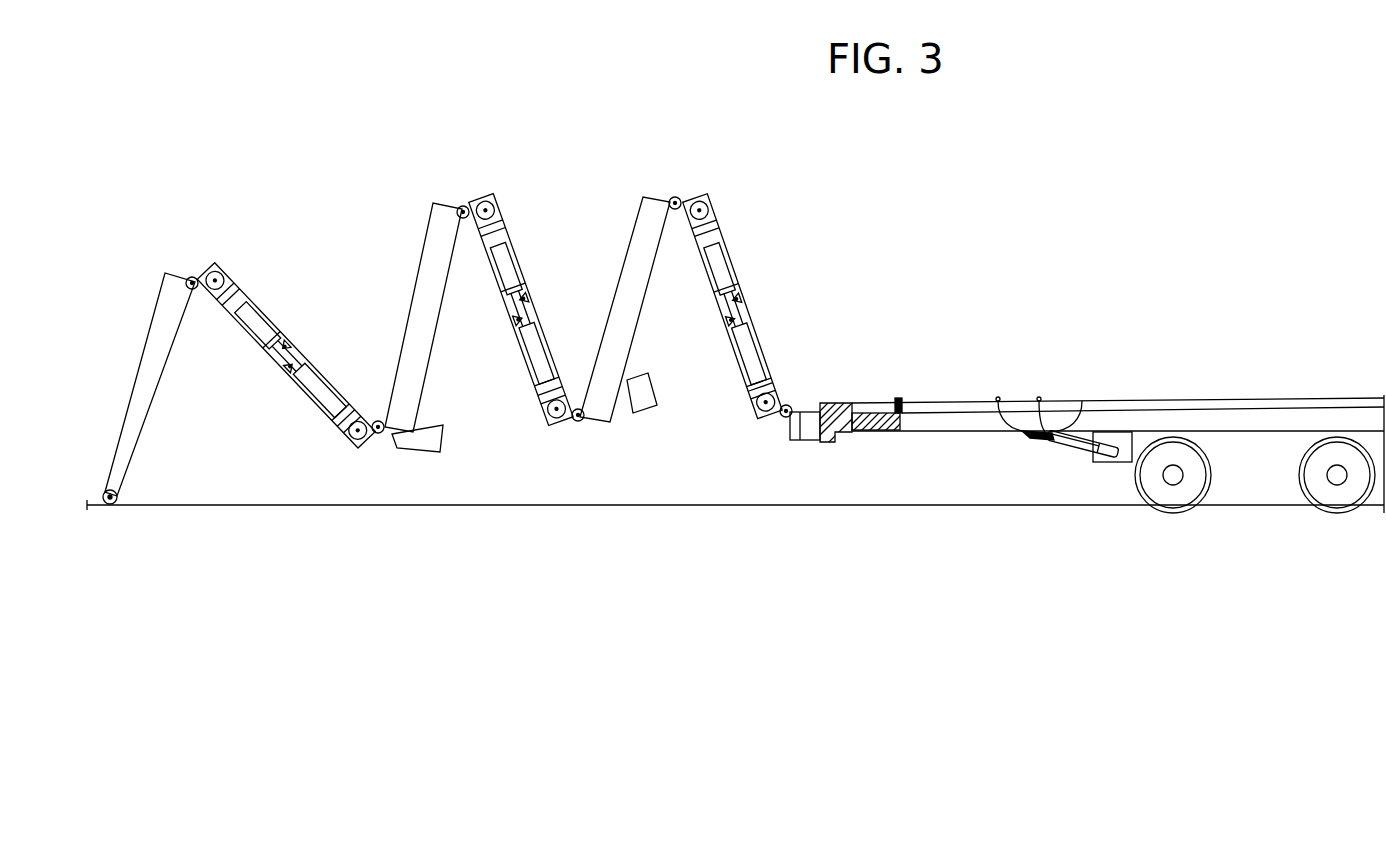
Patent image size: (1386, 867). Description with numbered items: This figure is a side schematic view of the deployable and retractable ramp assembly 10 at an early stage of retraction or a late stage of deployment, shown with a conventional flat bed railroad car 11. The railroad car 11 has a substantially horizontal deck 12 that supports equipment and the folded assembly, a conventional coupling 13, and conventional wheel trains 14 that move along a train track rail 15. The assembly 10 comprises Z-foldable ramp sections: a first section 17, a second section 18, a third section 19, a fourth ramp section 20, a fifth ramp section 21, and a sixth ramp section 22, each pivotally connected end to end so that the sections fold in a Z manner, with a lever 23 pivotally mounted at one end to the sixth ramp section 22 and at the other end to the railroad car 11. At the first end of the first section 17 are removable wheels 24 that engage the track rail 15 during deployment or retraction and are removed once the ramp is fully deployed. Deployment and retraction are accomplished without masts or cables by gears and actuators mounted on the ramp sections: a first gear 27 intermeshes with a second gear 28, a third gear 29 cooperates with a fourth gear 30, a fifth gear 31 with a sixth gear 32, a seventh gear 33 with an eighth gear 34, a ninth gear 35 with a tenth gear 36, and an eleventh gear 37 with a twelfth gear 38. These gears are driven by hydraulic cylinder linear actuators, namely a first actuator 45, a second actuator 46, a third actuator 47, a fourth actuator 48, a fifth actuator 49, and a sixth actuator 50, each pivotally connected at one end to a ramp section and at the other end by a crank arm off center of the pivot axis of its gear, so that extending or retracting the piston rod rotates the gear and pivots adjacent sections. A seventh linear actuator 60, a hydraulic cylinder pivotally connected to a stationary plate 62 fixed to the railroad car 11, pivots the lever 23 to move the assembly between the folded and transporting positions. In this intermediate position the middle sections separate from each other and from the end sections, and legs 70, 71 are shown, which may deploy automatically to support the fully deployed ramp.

The ramp assembly 10 is at (534, 139).
The railroad car 11 is at (1210, 386).
The deck 12 is at (1317, 399).
The coupling 13 is at (850, 436).
The wheel trains 14 is at (1188, 488).
The train track rail 15 is at (713, 505).
The first section 17 is at (126, 347).
The second section 18 is at (294, 318).
The third section 19 is at (404, 279).
The fourth ramp section 20 is at (503, 240).
The fifth ramp section 21 is at (620, 290).
The sixth ramp section 22 is at (730, 254).
The lever 23 is at (810, 406).
The wheels 24 is at (115, 502).
The first gear 27 is at (192, 276).
The second gear 28 is at (207, 300).
The third gear 29 is at (362, 417).
The fourth gear 30 is at (378, 434).
The fifth gear 31 is at (463, 205).
The sixth gear 32 is at (482, 197).
The seventh gear 33 is at (565, 395).
The eighth gear 34 is at (573, 421).
The ninth gear 35 is at (675, 197).
The tenth gear 36 is at (692, 196).
The eleventh gear 37 is at (783, 417).
The twelfth gear 38 is at (777, 393).
The first actuator 45 is at (247, 338).
The second actuator 46 is at (310, 397).
The third actuator 47 is at (503, 267).
The fourth actuator 48 is at (527, 350).
The fifth actuator 49 is at (700, 272).
The sixth actuator 50 is at (730, 353).
The linear actuator 60 is at (1065, 450).
The plate 62 is at (1098, 463).
The leg 70 is at (427, 445).
The leg 71 is at (637, 409).